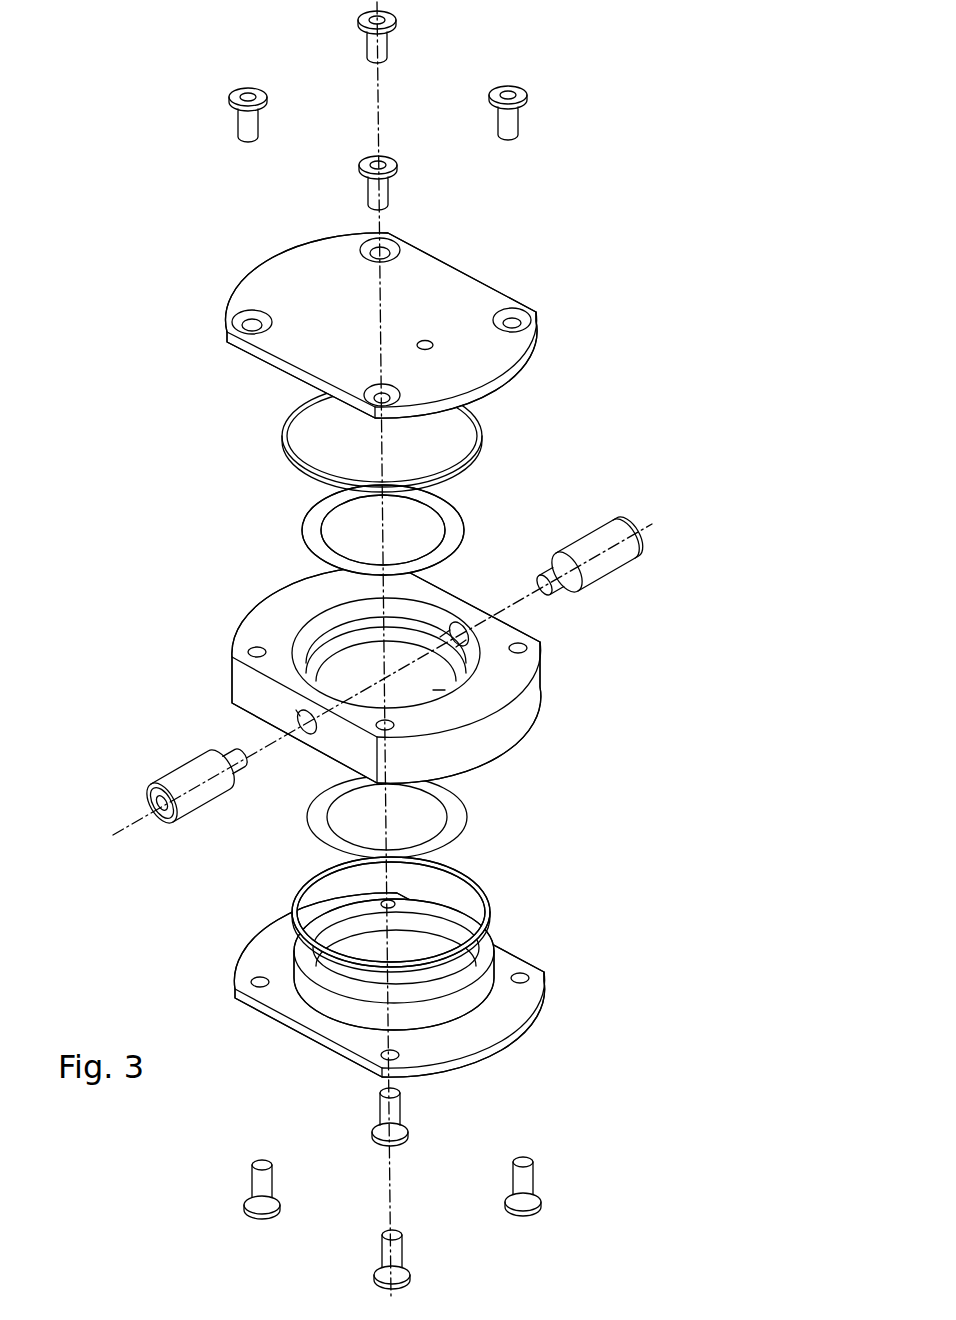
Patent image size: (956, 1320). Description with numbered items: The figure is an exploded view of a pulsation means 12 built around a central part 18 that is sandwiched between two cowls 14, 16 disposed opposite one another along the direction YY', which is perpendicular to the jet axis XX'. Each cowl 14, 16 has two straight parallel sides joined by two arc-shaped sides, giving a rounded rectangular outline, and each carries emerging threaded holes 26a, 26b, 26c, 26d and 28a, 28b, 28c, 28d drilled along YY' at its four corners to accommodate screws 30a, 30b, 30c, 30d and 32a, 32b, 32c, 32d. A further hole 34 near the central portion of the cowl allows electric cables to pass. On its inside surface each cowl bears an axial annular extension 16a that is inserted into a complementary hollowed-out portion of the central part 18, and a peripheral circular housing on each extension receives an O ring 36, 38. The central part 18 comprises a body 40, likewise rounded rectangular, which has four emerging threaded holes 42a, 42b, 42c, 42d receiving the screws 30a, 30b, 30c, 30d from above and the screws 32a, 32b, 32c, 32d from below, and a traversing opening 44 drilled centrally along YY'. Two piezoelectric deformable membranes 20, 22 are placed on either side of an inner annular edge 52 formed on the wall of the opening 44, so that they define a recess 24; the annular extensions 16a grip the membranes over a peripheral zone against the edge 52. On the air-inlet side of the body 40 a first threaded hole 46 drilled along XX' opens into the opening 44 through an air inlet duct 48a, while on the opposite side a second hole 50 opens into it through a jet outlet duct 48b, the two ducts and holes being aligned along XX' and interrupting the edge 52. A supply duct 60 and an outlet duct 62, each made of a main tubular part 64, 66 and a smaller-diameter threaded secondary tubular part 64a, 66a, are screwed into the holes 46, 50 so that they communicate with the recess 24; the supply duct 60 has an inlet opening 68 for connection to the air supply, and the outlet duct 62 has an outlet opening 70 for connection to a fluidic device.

The pulsation means 12 is at (426, 649).
The cowl 14 is at (390, 322).
The cowl 16 is at (390, 974).
The annular extension 16a is at (482, 947).
The central part 18 is at (400, 662).
The piezoelectric deformable membrane 20 is at (455, 508).
The piezoelectric deformable membrane 22 is at (470, 810).
The recess 24 is at (328, 666).
The threaded hole 26a is at (524, 318).
The threaded hole 26b is at (397, 243).
The threaded hole 26c is at (240, 320).
The threaded hole 26d is at (370, 405).
The threaded hole 28a is at (530, 978).
The threaded hole 28b is at (395, 905).
The threaded hole 28c is at (252, 982).
The threaded hole 28d is at (398, 1060).
The screw 30a is at (522, 98).
The screw 30b is at (398, 22).
The screw 30c is at (233, 100).
The screw 30d is at (397, 166).
The screw 32a is at (535, 1180).
The screw 32b is at (380, 1105).
The screw 32c is at (252, 1185).
The screw 32d is at (382, 1250).
The hole 34 is at (432, 348).
The O ring 36 is at (480, 428).
The O ring 38 is at (293, 898).
The body 40 is at (527, 703).
The threaded hole 42a is at (528, 650).
The threaded hole 42b is at (450, 580).
The threaded hole 42c is at (250, 650).
The threaded hole 42d is at (392, 730).
The traversing opening 44 is at (433, 690).
The first threaded hole 46 is at (465, 625).
The air inlet duct 48a is at (480, 633).
The jet outlet duct 48b is at (307, 730).
The second hole 50 is at (295, 713).
The inner annular edge 52 is at (317, 637).
The supply duct 60 is at (603, 535).
The outlet duct 62 is at (202, 790).
The main tubular part 64 is at (612, 568).
The threaded secondary tubular part 64a is at (565, 568).
The main tubular part 66 is at (212, 775).
The threaded secondary tubular part 66a is at (248, 760).
The inlet opening 68 is at (632, 537).
The outlet opening 70 is at (165, 800).